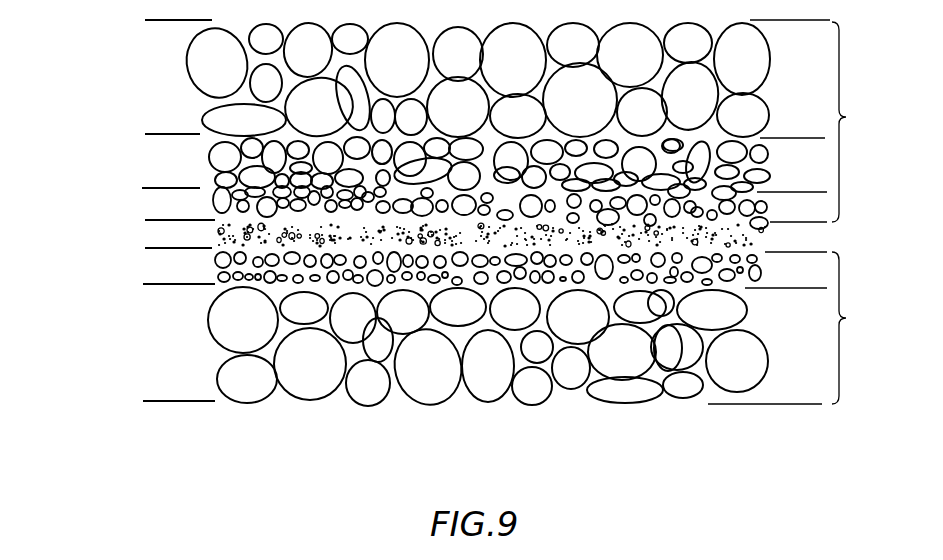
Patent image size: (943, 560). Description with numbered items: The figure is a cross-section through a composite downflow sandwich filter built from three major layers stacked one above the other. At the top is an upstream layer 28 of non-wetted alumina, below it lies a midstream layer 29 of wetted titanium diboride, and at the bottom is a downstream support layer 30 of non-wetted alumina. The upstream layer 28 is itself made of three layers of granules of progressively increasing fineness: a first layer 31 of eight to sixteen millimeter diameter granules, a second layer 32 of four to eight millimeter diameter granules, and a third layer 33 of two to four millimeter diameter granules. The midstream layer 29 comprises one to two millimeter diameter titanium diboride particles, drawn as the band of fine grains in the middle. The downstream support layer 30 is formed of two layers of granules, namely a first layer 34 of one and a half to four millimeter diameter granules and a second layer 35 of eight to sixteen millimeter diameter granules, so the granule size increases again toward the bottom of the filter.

The upstream layer 28 is at (815, 121).
The midstream layer 29 is at (160, 233).
The downstream support layer 30 is at (794, 328).
The first layer 31 is at (165, 78).
The second layer 32 is at (165, 162).
The third layer 33 is at (160, 205).
The first layer 34 is at (160, 268).
The second layer 35 is at (160, 342).